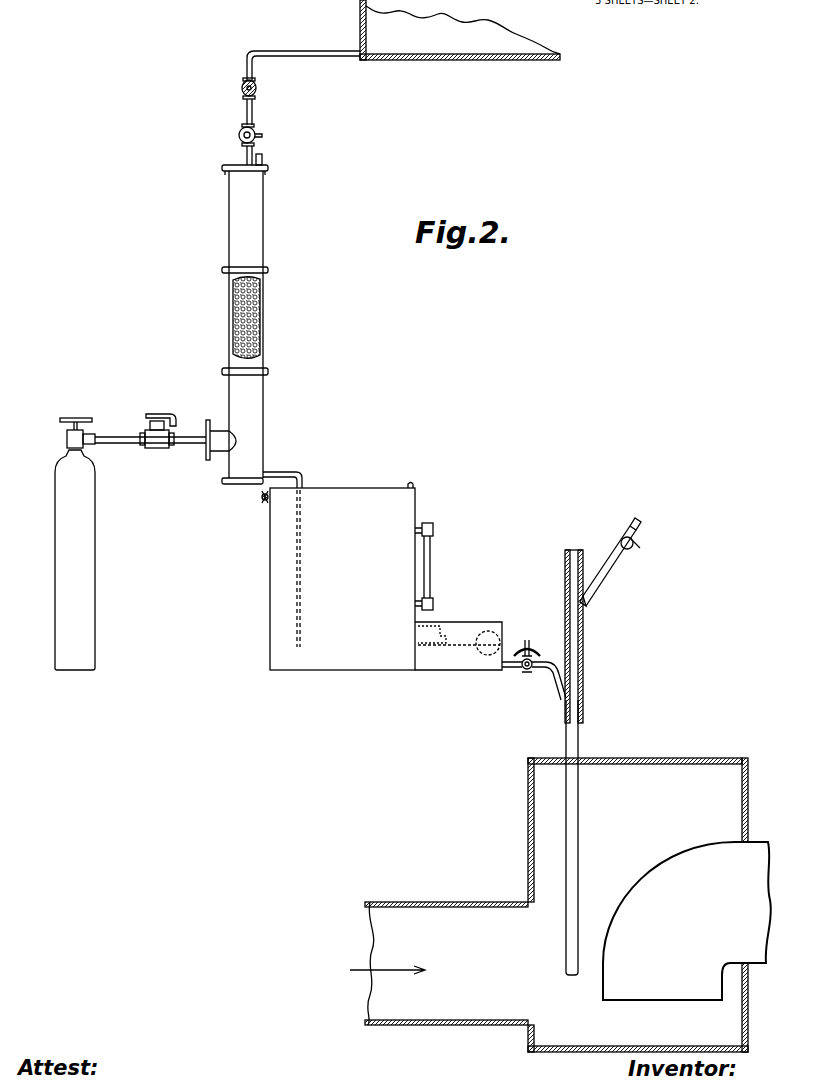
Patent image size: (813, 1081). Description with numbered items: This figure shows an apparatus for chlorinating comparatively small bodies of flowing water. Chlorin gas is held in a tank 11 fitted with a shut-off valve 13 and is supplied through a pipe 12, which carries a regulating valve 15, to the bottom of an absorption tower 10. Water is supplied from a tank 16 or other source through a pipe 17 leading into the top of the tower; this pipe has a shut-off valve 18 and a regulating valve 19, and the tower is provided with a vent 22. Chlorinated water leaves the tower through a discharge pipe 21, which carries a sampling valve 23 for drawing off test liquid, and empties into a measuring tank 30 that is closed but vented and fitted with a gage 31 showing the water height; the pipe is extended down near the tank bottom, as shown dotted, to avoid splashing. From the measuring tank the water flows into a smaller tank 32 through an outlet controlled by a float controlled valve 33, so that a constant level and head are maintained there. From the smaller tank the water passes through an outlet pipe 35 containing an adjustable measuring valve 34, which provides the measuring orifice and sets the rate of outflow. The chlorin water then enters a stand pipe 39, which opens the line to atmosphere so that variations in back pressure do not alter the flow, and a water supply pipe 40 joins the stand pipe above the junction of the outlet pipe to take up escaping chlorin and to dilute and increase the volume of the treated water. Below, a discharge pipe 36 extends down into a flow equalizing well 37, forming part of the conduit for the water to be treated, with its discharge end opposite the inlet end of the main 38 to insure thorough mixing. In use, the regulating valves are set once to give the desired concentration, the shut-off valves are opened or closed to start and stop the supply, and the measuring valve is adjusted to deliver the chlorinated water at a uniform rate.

The absorption tower 10 is at (255, 235).
The tank 11 is at (80, 538).
The pipe 12 is at (125, 435).
The shut-off valve 13 is at (66, 439).
The regulating valve 15 is at (155, 448).
The tank 16 is at (487, 62).
The pipe 17 is at (270, 53).
The shut-off valve 18 is at (257, 88).
The regulating valve 19 is at (256, 132).
The discharge pipe 21 is at (297, 469).
The vent 22 is at (263, 160).
The sampling valve 23 is at (262, 500).
The measuring tank 30 is at (342, 577).
The gage 31 is at (433, 550).
The smaller tank 32 is at (480, 622).
The float controlled valve 33 is at (442, 622).
The adjustable measuring valve 34 is at (526, 672).
The outlet pipe 35 is at (508, 668).
The discharge pipe 36 is at (580, 793).
The flow equalizing well 37 is at (528, 823).
The main 38 is at (456, 902).
The stand pipe 39 is at (566, 578).
The water supply pipe 40 is at (615, 566).